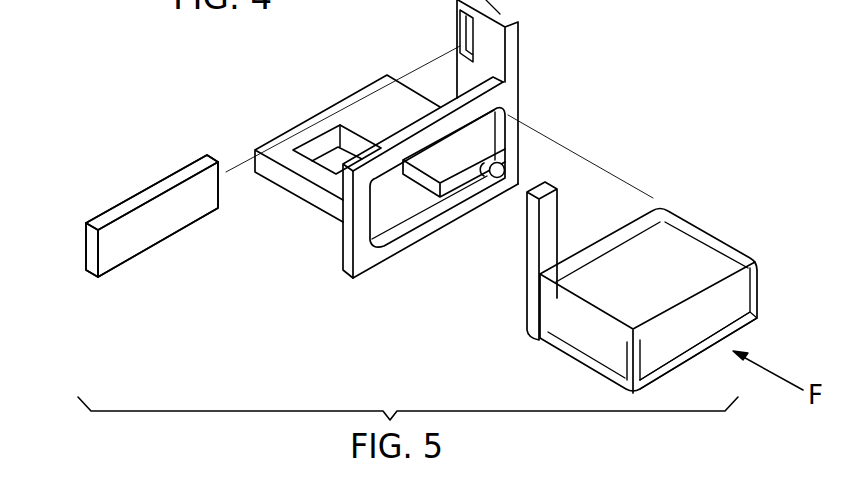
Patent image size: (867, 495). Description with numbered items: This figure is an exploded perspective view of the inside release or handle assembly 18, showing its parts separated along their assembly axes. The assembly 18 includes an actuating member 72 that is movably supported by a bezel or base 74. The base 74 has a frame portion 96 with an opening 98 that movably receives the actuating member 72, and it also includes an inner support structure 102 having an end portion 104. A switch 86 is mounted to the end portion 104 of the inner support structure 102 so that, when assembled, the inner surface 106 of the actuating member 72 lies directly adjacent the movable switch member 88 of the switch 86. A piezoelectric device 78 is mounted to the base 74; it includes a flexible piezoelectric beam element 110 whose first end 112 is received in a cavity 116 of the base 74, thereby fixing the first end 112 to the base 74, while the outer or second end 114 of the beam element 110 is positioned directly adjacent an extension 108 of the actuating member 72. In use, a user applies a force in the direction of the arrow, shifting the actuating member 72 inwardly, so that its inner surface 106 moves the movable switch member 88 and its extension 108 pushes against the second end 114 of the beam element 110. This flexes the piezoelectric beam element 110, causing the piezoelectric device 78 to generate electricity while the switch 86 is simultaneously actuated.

The inside release or handle assembly 18 is at (607, 101).
The actuating member 72 is at (722, 238).
The bezel or base 74 is at (520, 47).
The piezoelectric device 78 is at (155, 183).
The switch 86 is at (468, 193).
The movable switch member 88 is at (507, 173).
The frame portion 96 is at (388, 249).
The opening 98 is at (380, 217).
The inner support structure 102 is at (313, 115).
The end portion 104 is at (400, 150).
The inner surface 106 is at (724, 308).
The extension 108 is at (532, 221).
The flexible piezoelectric beam element 110 is at (120, 202).
The first end 112 is at (207, 156).
The outer or second end 114 is at (88, 225).
The cavity 116 is at (460, 28).